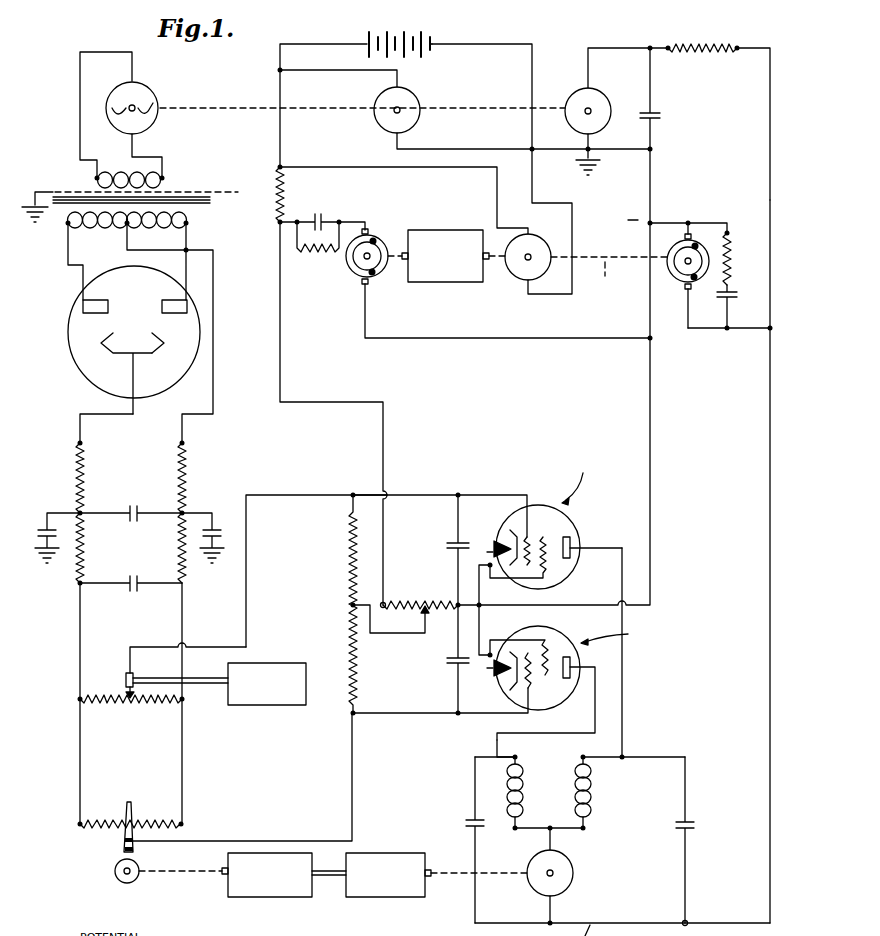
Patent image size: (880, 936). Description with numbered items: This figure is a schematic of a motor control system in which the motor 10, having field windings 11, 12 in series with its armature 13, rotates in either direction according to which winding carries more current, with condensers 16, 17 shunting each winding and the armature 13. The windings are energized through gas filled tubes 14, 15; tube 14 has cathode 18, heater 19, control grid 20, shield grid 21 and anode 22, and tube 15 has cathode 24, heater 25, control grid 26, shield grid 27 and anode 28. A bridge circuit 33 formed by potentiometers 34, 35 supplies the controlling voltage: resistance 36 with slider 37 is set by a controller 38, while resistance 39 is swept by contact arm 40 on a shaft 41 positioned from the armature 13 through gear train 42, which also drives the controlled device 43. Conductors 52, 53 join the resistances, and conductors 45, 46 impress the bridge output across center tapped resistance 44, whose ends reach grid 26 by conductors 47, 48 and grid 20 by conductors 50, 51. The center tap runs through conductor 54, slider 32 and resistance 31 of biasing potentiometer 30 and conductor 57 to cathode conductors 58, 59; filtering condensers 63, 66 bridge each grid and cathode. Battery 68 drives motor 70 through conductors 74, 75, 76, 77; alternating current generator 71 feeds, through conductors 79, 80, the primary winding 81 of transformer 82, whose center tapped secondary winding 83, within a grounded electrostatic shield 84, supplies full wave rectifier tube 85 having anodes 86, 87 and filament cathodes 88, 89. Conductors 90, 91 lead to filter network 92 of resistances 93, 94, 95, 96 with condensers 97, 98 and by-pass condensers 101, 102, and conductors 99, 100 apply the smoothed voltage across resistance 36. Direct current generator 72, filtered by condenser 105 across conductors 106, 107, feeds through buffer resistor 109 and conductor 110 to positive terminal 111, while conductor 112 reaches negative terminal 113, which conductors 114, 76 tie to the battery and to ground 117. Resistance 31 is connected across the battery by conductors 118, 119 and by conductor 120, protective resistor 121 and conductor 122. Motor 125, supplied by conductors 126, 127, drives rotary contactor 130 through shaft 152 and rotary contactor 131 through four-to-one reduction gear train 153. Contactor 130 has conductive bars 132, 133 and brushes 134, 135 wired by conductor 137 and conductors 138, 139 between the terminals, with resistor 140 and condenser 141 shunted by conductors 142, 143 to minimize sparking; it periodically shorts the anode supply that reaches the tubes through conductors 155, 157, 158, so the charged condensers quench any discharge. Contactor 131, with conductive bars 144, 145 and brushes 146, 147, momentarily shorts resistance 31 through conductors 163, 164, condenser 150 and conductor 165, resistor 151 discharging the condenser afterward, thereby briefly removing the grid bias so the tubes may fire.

The motor 10 is at (572, 861).
The field winding 11 is at (590, 786).
The field winding 12 is at (508, 781).
The armature 13 is at (566, 884).
The gas filled thermionic discharge device 14 is at (576, 694).
The gas filled thermionic discharge device 15 is at (580, 532).
The condenser 16 is at (690, 839).
The condenser 17 is at (472, 818).
The cathode 18 is at (512, 688).
The cathode heater 19 is at (490, 680).
The control grid 20 is at (534, 683).
The shield grid 21 is at (548, 653).
The anode 22 is at (575, 662).
The cathode 24 is at (512, 522).
The heater 25 is at (492, 546).
The control grid 26 is at (531, 536).
The shield grid 27 is at (548, 535).
The anode 28 is at (573, 546).
The potentiometer 30 is at (433, 646).
The resistance 31 is at (412, 600).
The slider 32 is at (391, 632).
The bridge circuit 33 is at (186, 760).
The controlling potentiometer 34 is at (101, 694).
The potentiometer 35 is at (119, 832).
The resistance 36 is at (150, 703).
The slider 37 is at (127, 684).
The controller 38 is at (230, 693).
The resistance 39 is at (97, 822).
The contact arm 40 is at (133, 812).
The shaft 41 is at (138, 871).
The gear train 42 is at (405, 898).
The controlled device 43 is at (285, 898).
The center tapped resistance 44 is at (350, 569).
The conductor 45 is at (308, 494).
The conductor 46 is at (260, 840).
The conductor 47 is at (422, 494).
The conductor 48 is at (497, 494).
The conductor 50 is at (405, 716).
The conductor 51 is at (478, 716).
The conductor 52 is at (78, 753).
The conductor 53 is at (185, 783).
The conductor 54 is at (380, 636).
The conductor 57 is at (467, 610).
The conductor 58 is at (481, 595).
The conductor 59 is at (482, 622).
The capacitor 63 is at (453, 666).
The condenser 66 is at (455, 540).
The battery 68 is at (433, 42).
The motor 70 is at (410, 104).
The alternating current generator 71 is at (150, 99).
The direct current generator 72 is at (602, 109).
The conductor 74 is at (352, 76).
The conductor 75 is at (278, 56).
The conductor 76 is at (536, 68).
The conductor 77 is at (478, 149).
The conductor 79 is at (80, 120).
The conductor 80 is at (164, 166).
The primary winding 81 is at (168, 183).
The step-up transformer 82 is at (199, 211).
The center tapped secondary winding 83 is at (103, 230).
The shield 84 is at (227, 192).
The full wave rectifier tube 85 is at (188, 340).
The anode 86 is at (95, 313).
The anode 87 is at (166, 299).
The filament cathode 88 is at (102, 350).
The filament cathode 89 is at (161, 352).
The conductor 90 is at (97, 415).
The conductor 91 is at (214, 286).
The filter network 92 is at (194, 497).
The resistance 93 is at (76, 463).
The resistance 94 is at (75, 567).
The resistance 95 is at (186, 467).
The resistance 96 is at (184, 572).
The condenser 97 is at (140, 512).
The condenser 98 is at (140, 581).
The conductor 99 is at (78, 641).
The conductor 100 is at (185, 631).
The condenser 101 is at (41, 528).
The condenser 102 is at (213, 528).
The filter condenser 105 is at (660, 113).
The conductor 106 is at (619, 47).
The conductor 107 is at (627, 151).
The resistor 109 is at (718, 47).
The conductor 110 is at (768, 168).
The positive terminal 111 is at (771, 330).
The conductor 112 is at (652, 173).
The negative terminal 113 is at (645, 225).
The conductor 114 is at (555, 150).
The ground 117 is at (583, 172).
The conductor 118 is at (653, 486).
The conductor 119 is at (648, 309).
The conductor 120 is at (285, 353).
The protective resistor 121 is at (288, 186).
The conductor 122 is at (286, 141).
The direct current motor 125 is at (508, 271).
The conductor 126 is at (452, 168).
The conductor 127 is at (550, 221).
The rotary contactor 130 is at (681, 288).
The rotary contactor 131 is at (379, 272).
The conductive bar 132 is at (682, 275).
The conductive bar 133 is at (729, 244).
The brush 134 is at (695, 236).
The brush 135 is at (691, 296).
The conductor 137 is at (669, 222).
The conductor 138 is at (707, 330).
The conductor 139 is at (746, 330).
The resistor 140 is at (731, 257).
The condenser 141 is at (731, 292).
The conductor 142 is at (699, 243).
The conductor 143 is at (729, 304).
The conductive bar 144 is at (356, 266).
The conductive bar 145 is at (378, 240).
The brush 146 is at (369, 228).
The brush 147 is at (362, 285).
The condenser 150 is at (323, 215).
The resistor 151 is at (328, 252).
The shaft 152 is at (609, 276).
The reduction gear train 153 is at (463, 278).
The conductor 155 is at (768, 542).
The conductor 157 is at (553, 735).
The conductor 158 is at (624, 681).
The conductor 163 is at (522, 340).
The conductor 164 is at (353, 221).
The conductor 165 is at (290, 232).